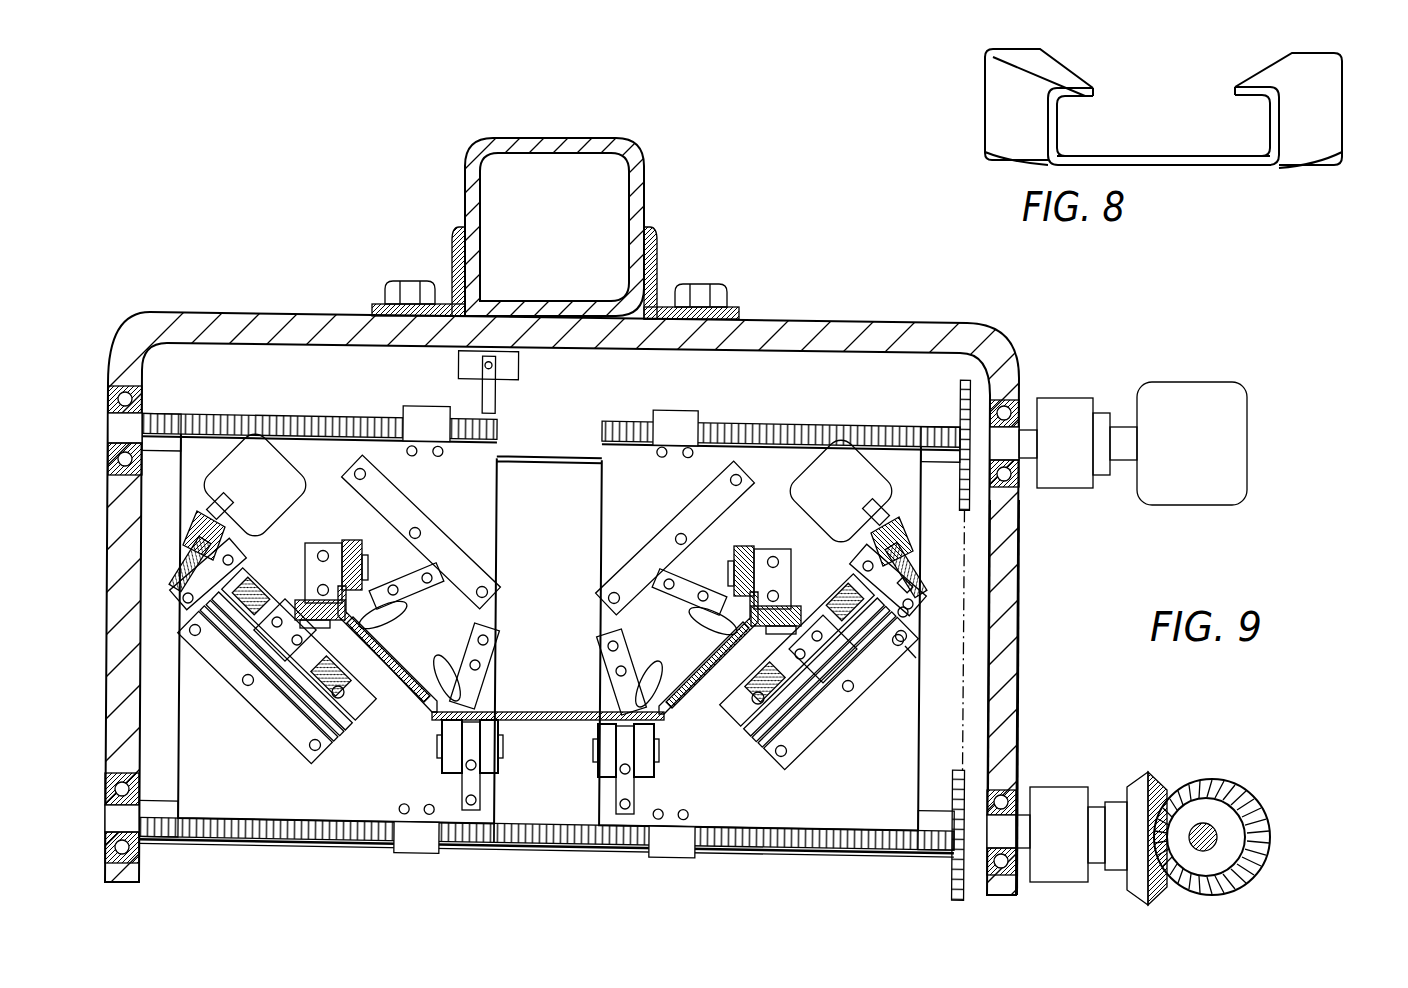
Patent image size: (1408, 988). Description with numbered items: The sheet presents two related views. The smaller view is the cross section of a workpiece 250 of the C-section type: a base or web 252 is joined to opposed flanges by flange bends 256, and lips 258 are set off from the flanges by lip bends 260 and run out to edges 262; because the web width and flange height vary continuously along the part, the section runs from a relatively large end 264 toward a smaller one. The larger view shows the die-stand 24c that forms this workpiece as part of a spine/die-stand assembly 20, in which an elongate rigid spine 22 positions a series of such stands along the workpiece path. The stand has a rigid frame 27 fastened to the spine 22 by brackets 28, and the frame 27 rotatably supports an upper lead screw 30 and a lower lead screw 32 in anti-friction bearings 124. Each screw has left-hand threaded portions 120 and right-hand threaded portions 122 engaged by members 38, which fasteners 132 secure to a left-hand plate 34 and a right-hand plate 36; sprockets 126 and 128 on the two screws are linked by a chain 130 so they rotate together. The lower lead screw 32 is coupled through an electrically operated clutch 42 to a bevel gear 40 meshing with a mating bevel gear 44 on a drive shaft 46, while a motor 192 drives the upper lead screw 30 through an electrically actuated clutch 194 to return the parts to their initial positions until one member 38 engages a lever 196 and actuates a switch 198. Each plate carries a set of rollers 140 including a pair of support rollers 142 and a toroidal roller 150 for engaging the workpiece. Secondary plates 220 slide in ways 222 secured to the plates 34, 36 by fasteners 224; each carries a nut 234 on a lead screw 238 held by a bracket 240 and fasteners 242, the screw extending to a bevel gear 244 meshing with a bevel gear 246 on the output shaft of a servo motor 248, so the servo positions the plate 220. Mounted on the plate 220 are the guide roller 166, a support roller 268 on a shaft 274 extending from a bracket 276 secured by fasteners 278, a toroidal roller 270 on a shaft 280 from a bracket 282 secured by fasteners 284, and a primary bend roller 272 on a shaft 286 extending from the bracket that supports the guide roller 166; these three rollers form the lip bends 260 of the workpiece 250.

In FIG. 9, the spine/die-stand assembly 20 is at (568, 492).
In FIG. 9, the spine 22 is at (480, 138).
In FIG. 9, the die-stand 24c is at (268, 280).
In FIG. 9, the frame 27 is at (1018, 650).
In FIG. 9, the brackets 28 is at (452, 268).
In FIG. 9, the upper lead screw 30 is at (550, 617).
In FIG. 9, the lower lead screw 32 is at (885, 845).
In FIG. 9, the left-hand plate 34 is at (498, 535).
In FIG. 9, the right-hand plate 36 is at (602, 500).
In FIG. 9, the members 38 is at (428, 401).
In FIG. 9, the bevel gear 40 is at (1138, 787).
In FIG. 9, the electrically operated clutch 42 is at (1062, 820).
In FIG. 9, the mating bevel gear 44 is at (1240, 790).
In FIG. 9, the drive shaft 46 is at (1203, 822).
In FIG. 9, the left-hand threaded portions 120 is at (818, 413).
In FIG. 9, the right-hand threaded portions 122 is at (250, 413).
In FIG. 9, the anti-friction bearings 124 is at (142, 392).
In FIG. 9, the sprocket 126 is at (962, 388).
In FIG. 9, the sprocket 128 is at (955, 858).
In FIG. 9, the chain 130 is at (989, 590).
In FIG. 9, the fasteners 132 is at (433, 441).
In FIG. 9, the sets of rollers 140 is at (537, 767).
In FIG. 9, the support rollers 142 is at (458, 748).
In FIG. 9, the toroidal roller 150 is at (440, 691).
In FIG. 9, the guide roller 166 is at (345, 543).
In FIG. 9, the motor 192 is at (1195, 400).
In FIG. 9, the electrically actuated clutch 194 is at (1065, 398).
In FIG. 9, the lever 196 is at (495, 400).
In FIG. 9, the switch 198 is at (518, 360).
In FIG. 9, the secondary plates 220 is at (771, 502).
In FIG. 9, the ways 222 is at (462, 560).
In FIG. 9, the fasteners 224 is at (914, 656).
In FIG. 9, the nut 234 is at (810, 668).
In FIG. 9, the lead screw 238 is at (238, 632).
In FIG. 9, the bracket 240 is at (909, 611).
In FIG. 9, the fasteners 242 is at (905, 638).
In FIG. 9, the bevel gear 244 is at (912, 574).
In FIG. 9, the bevel gear 246 is at (895, 538).
In FIG. 9, the servo motor 248 is at (233, 492).
In FIG. 9, the workpiece 250 is at (548, 684).
In FIG. 8, the workpiece 250 is at (1210, 112).
In FIG. 9, the base or web 252 is at (575, 722).
In FIG. 8, the base or web 252 is at (1181, 168).
In FIG. 8, the flange bends 256 is at (1059, 146).
In FIG. 8, the lips 258 is at (1093, 93).
In FIG. 8, the lip bends 260 is at (1057, 102).
In FIG. 8, the edges 262 is at (1090, 82).
In FIG. 8, the relatively large end 264 is at (1196, 102).
In FIG. 9, the support roller 268 is at (288, 714).
In FIG. 9, the toroidal roller 270 is at (474, 648).
In FIG. 9, the primary bend roller 272 is at (300, 582).
In FIG. 9, the shaft 274 is at (268, 698).
In FIG. 9, the bracket 276 is at (322, 748).
In FIG. 9, the fasteners 278 is at (308, 731).
In FIG. 9, the shaft 280 is at (386, 625).
In FIG. 9, the bracket 282 is at (424, 598).
In FIG. 9, the fasteners 284 is at (402, 578).
In FIG. 9, the shaft 286 is at (303, 610).